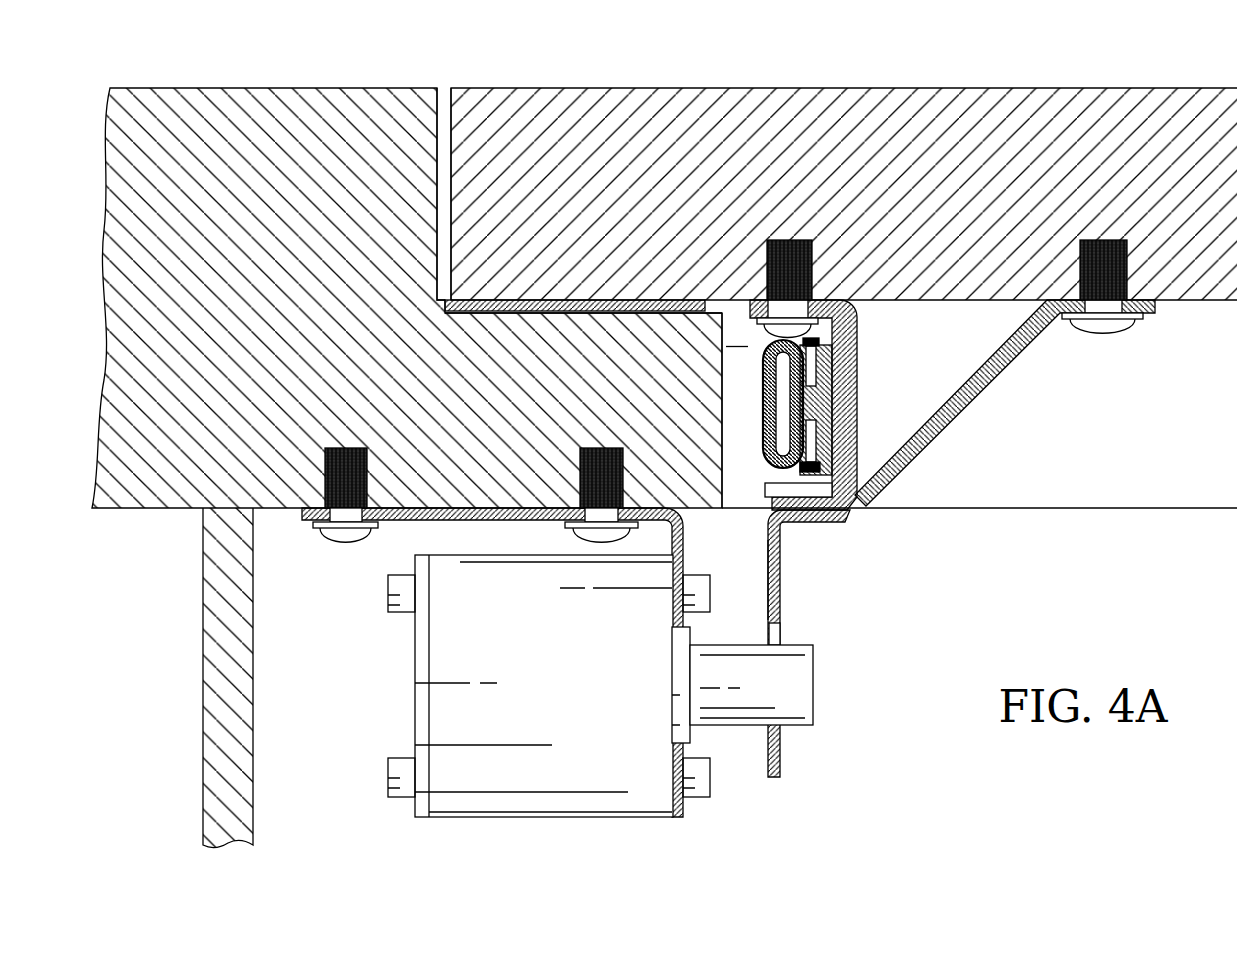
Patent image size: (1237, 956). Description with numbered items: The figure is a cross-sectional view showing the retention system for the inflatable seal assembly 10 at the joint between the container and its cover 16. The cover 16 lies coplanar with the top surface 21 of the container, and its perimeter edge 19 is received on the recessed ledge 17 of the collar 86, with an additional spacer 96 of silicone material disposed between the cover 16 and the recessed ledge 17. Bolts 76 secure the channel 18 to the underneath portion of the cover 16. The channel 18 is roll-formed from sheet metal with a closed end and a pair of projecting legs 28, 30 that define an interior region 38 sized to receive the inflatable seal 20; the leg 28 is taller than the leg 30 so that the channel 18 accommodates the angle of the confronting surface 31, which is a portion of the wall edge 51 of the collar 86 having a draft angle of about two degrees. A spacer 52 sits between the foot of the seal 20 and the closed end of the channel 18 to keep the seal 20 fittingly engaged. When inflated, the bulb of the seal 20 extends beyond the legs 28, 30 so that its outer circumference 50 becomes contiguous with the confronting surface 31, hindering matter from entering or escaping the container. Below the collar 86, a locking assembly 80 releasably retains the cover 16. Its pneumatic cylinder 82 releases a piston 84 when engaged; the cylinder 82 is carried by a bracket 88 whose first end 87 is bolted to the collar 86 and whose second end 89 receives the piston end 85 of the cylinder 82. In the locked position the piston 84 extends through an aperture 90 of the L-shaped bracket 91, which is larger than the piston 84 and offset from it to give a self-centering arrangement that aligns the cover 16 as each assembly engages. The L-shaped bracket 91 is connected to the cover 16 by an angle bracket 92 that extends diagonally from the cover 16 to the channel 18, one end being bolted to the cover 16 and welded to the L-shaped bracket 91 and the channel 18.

The inflatable seal assembly 10 is at (878, 434).
The cover 16 is at (1095, 122).
The recessed ledge 17 is at (513, 348).
The channel 18 is at (848, 410).
The perimeter edge 19 is at (440, 148).
The inflatable seal 20 is at (763, 422).
The top surface 21 is at (260, 88).
The projecting leg 28 is at (820, 296).
The projecting leg 30 is at (812, 527).
The confronting surface 31 is at (728, 386).
The interior region 38 is at (737, 336).
The outer circumference 50 is at (763, 407).
The wall edge 51 is at (728, 493).
The spacer 52 is at (843, 368).
The bolts 76 is at (790, 250).
The locking assembly 80 is at (788, 800).
The pneumatic cylinder 82 is at (527, 773).
The piston 84 is at (803, 687).
The piston end 85 is at (687, 730).
The collar 86 is at (445, 507).
The first end 87 is at (302, 518).
The bracket 88 is at (538, 507).
The second end 89 is at (680, 815).
The aperture 90 is at (782, 635).
The L-shaped bracket 91 is at (782, 573).
The angle bracket 92 is at (997, 367).
The spacer 96 is at (590, 300).